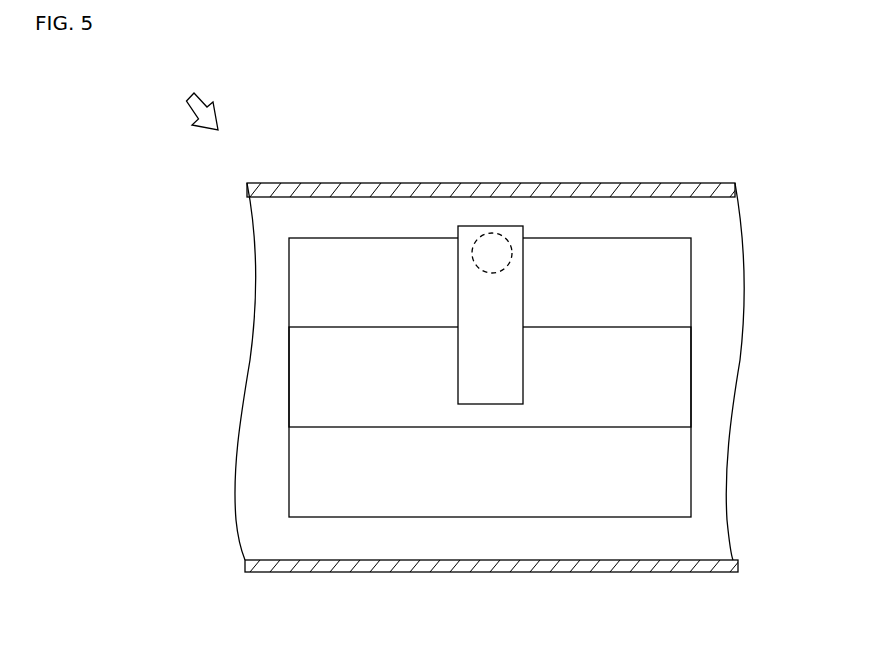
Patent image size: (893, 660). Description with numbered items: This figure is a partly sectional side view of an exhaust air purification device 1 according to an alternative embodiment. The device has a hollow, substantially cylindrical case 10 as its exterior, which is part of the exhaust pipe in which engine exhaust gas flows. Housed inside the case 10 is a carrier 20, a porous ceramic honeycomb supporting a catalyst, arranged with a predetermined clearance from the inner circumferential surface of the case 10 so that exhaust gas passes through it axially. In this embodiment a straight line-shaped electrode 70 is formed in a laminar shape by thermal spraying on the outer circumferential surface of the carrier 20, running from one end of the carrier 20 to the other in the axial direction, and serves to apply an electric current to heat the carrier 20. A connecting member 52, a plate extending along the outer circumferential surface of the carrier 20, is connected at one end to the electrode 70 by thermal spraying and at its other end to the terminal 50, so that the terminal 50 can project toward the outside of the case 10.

The exhaust air purification device 1 is at (194, 105).
The case 10 is at (493, 566).
The carrier 20 is at (315, 283).
The terminal 50 is at (486, 234).
The connecting member 52 is at (508, 287).
The electrode 70 is at (313, 382).